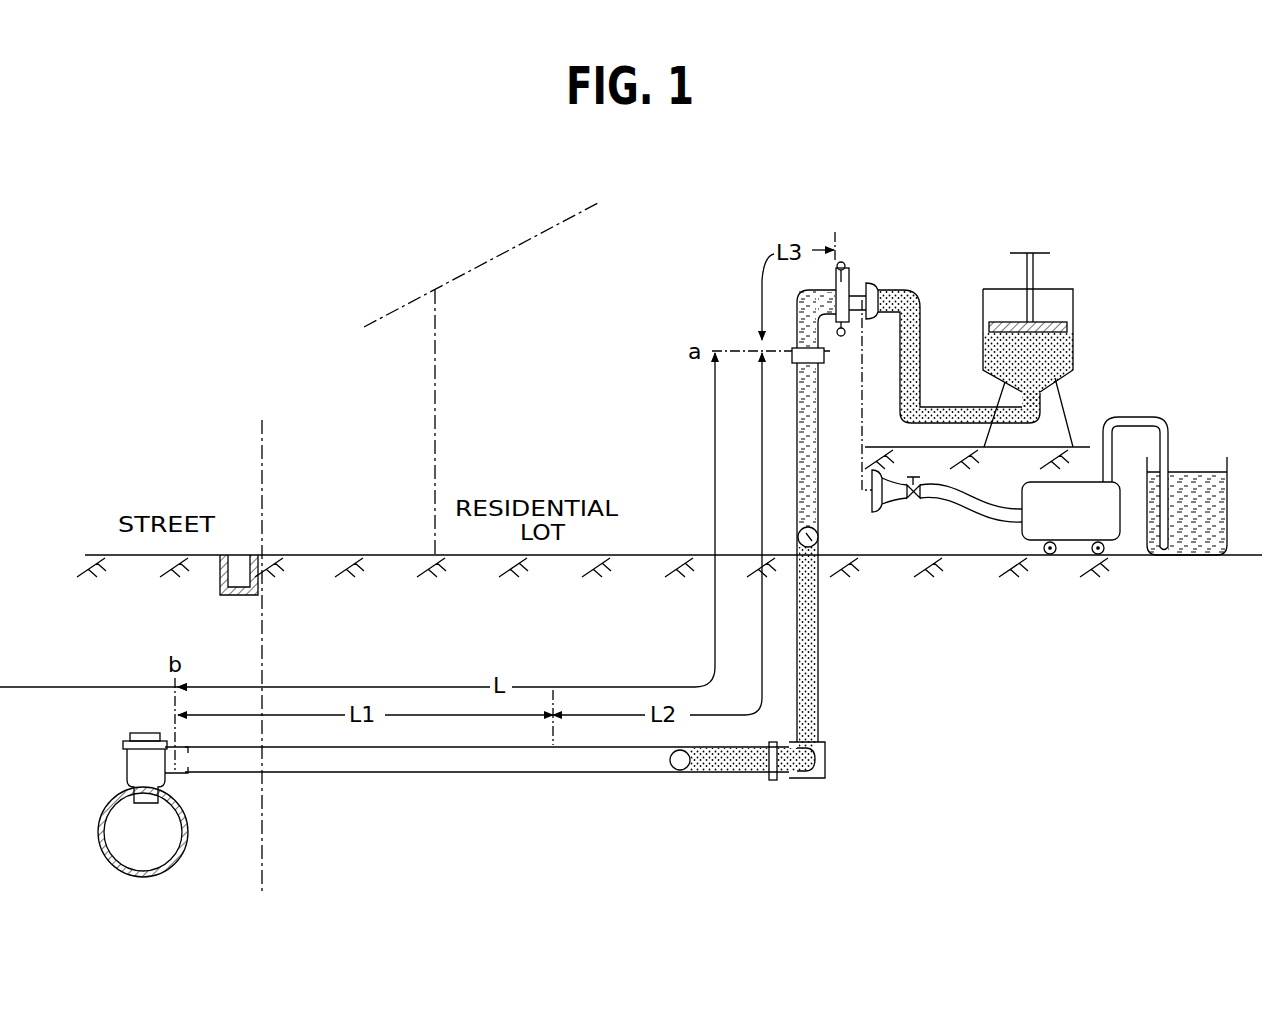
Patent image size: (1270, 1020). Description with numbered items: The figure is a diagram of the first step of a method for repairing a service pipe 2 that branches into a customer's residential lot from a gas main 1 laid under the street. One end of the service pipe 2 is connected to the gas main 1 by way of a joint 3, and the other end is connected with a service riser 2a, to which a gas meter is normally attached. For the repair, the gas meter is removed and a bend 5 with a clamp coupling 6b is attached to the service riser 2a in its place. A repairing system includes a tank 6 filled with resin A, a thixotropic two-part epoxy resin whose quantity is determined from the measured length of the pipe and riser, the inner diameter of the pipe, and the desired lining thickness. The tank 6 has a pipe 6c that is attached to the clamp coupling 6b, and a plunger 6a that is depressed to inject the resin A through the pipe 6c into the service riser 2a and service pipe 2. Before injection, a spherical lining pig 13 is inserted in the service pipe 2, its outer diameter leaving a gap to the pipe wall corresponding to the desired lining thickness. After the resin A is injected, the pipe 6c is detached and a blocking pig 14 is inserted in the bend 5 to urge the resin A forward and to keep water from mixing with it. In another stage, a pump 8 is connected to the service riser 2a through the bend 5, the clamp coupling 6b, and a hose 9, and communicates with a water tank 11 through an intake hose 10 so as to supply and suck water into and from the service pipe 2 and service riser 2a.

The gas main 1 is at (145, 878).
The service pipe 2 is at (472, 776).
The service riser 2a is at (797, 468).
The joint 3 is at (142, 748).
The bend 5 is at (800, 293).
The tank 6 is at (1075, 305).
The plunger 6a is at (1033, 274).
The clamp coupling 6b is at (843, 292).
The pipe 6c is at (917, 312).
The pump 8 is at (1082, 520).
The hose 9 is at (951, 493).
The intake hose 10 is at (1165, 421).
The water tank 11 is at (1180, 557).
The spherical lining pig 13 is at (681, 770).
The blocking pig 14 is at (815, 545).
The resin A is at (1075, 350).